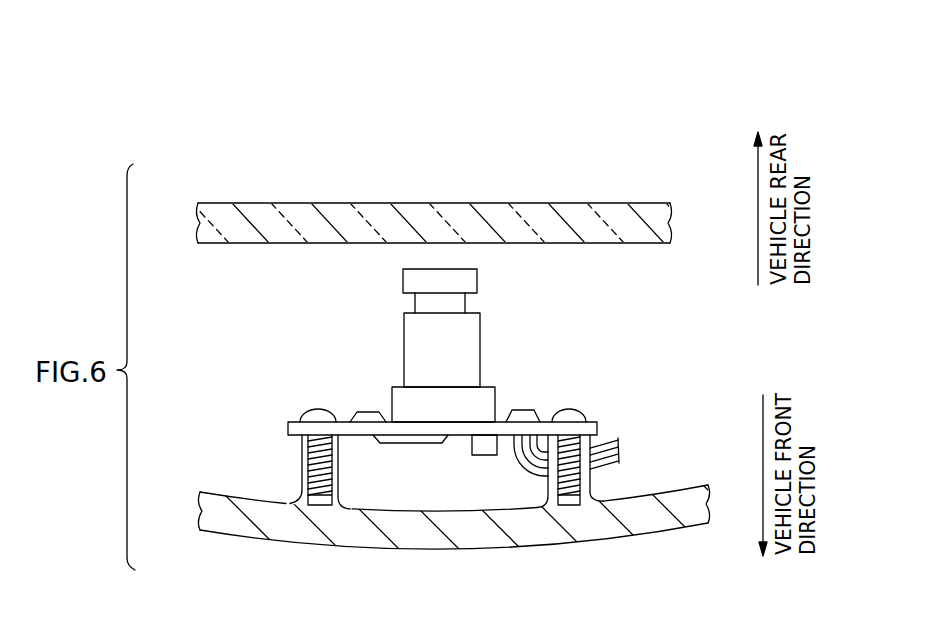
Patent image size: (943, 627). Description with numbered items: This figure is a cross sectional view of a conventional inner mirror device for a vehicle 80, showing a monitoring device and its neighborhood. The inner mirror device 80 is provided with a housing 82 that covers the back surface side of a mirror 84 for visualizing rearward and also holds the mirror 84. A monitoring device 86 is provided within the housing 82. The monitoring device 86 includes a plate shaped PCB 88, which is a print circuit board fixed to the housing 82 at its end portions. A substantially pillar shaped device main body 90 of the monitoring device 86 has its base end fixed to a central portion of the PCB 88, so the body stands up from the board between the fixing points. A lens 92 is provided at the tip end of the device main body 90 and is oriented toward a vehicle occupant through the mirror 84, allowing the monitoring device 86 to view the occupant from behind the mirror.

The inner mirror device for a vehicle 80 is at (459, 137).
The housing 82 is at (248, 538).
The mirror 84 is at (300, 203).
The monitoring device 86 is at (428, 342).
The PCB 88 is at (547, 420).
The device main body 90 is at (470, 340).
The lens 92 is at (477, 280).